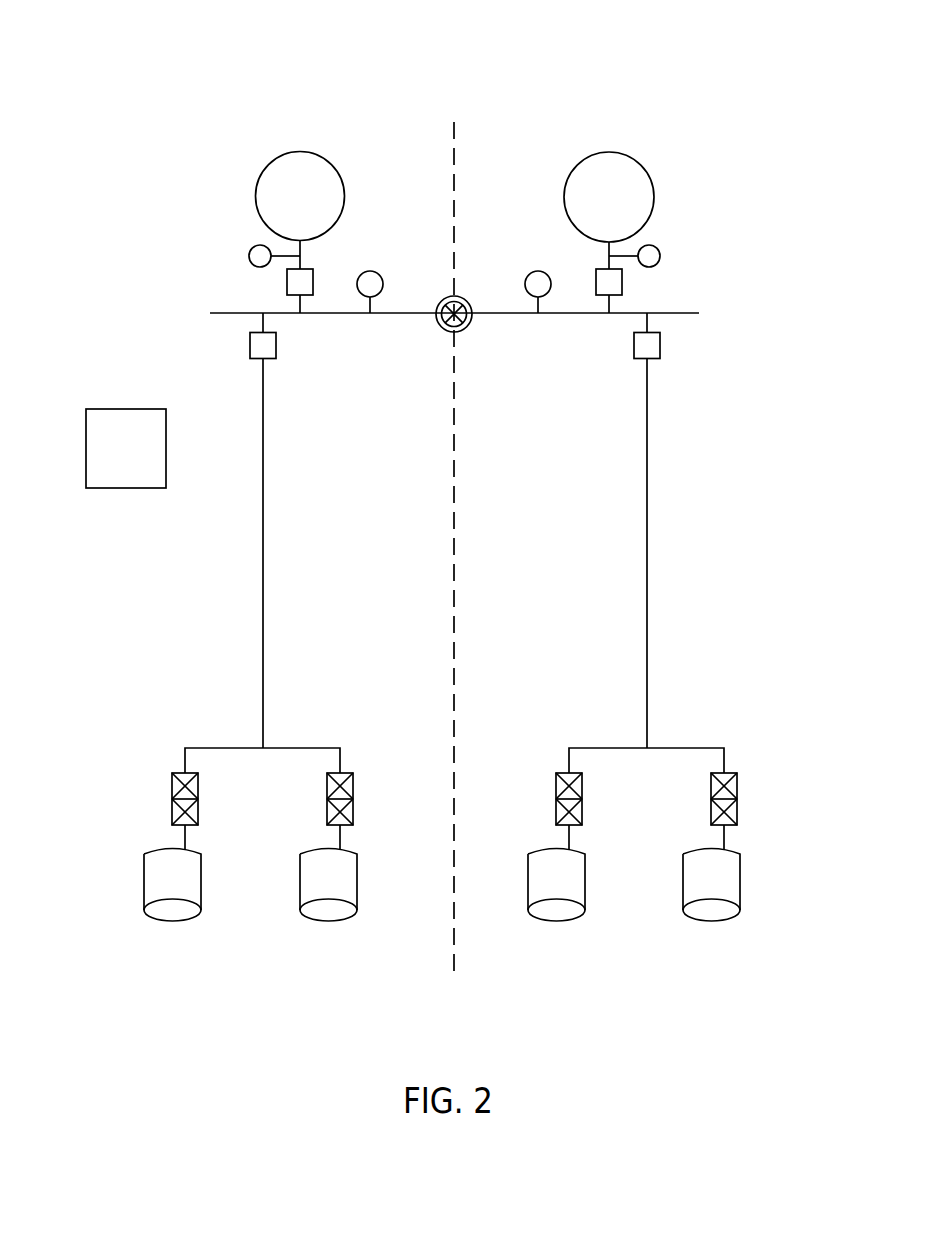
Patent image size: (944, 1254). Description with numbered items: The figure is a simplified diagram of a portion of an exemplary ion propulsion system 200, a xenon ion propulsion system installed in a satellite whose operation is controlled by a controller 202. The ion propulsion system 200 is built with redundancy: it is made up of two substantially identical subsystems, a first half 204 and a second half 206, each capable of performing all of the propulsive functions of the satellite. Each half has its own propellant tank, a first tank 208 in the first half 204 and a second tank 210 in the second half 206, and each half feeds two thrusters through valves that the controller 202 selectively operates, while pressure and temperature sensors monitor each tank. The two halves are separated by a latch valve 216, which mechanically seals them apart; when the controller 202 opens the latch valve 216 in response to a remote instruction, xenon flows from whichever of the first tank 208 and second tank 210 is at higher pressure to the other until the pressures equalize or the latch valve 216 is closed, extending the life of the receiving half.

The ion propulsion system 200 is at (443, 487).
The controller 202 is at (143, 460).
The first half 204 is at (264, 496).
The second half 206 is at (670, 496).
The first tank 208 is at (256, 197).
The second tank 210 is at (654, 197).
The latch valve 216 is at (467, 329).